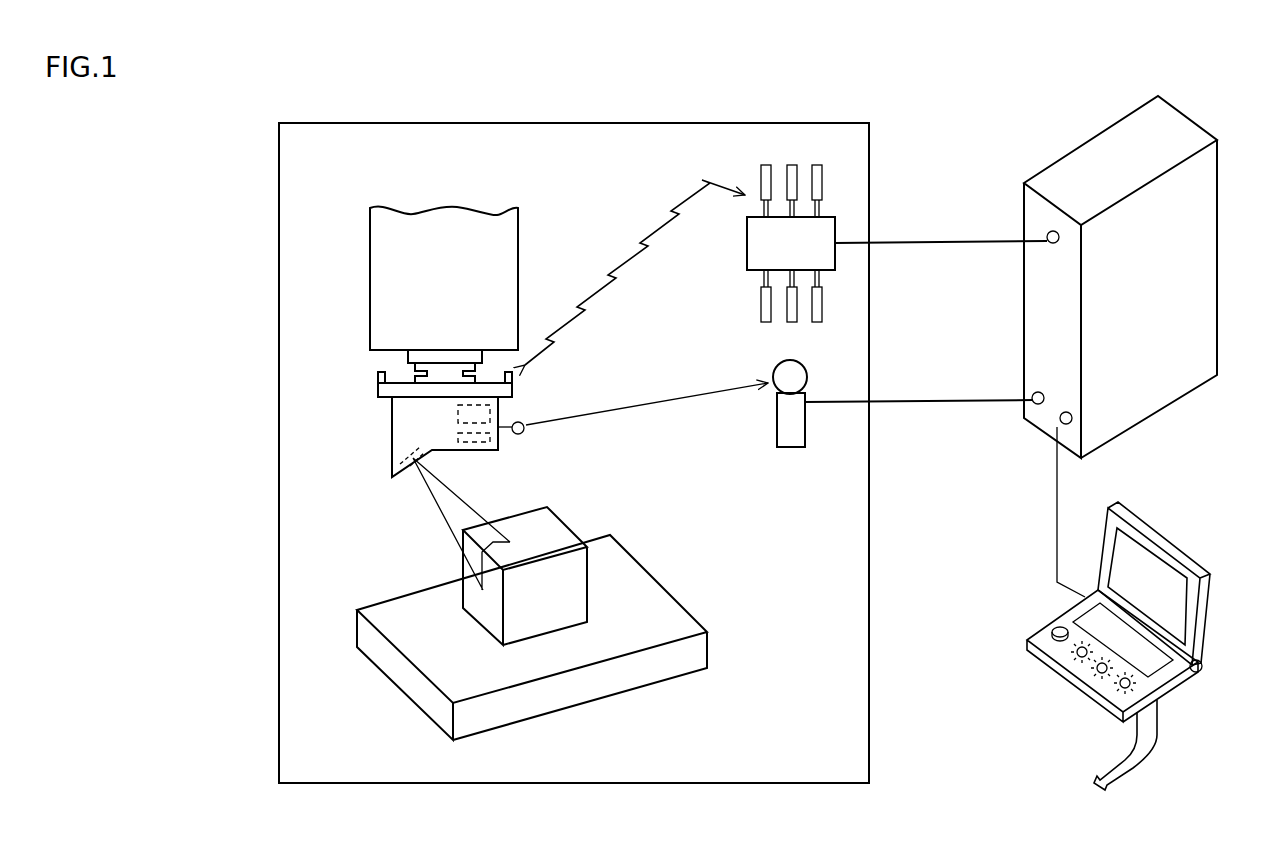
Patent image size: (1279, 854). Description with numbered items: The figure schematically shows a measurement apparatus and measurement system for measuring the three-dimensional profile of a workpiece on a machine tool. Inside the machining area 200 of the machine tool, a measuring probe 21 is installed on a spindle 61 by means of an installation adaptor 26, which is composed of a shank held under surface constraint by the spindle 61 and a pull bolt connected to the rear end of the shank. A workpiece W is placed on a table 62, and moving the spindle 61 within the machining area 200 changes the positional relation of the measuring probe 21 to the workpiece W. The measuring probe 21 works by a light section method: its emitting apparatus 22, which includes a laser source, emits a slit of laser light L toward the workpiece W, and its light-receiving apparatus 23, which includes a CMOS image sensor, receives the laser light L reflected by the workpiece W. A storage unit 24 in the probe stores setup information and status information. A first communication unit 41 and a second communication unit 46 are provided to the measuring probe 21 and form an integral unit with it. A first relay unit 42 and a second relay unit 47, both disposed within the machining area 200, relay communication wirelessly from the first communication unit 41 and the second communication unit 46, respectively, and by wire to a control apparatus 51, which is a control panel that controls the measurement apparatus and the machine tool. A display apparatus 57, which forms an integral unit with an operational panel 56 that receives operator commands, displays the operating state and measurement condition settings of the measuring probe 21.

The machining area 200 is at (292, 523).
The spindle 61 is at (383, 270).
The installation adaptor 26 is at (438, 373).
The first communication unit 41 is at (380, 391).
The measuring probe 21 is at (390, 452).
The storage unit 24 is at (458, 412).
The light-receiving apparatus 23 is at (458, 437).
The emitting apparatus 22 is at (400, 464).
The second communication unit 46 is at (524, 434).
The laser light L is at (480, 570).
The workpiece W is at (483, 603).
The table 62 is at (673, 615).
The first relay unit 42 is at (823, 228).
The second relay unit 47 is at (795, 423).
The control apparatus 51 is at (1203, 223).
The operational panel 56 is at (1195, 567).
The display apparatus 57 is at (1140, 570).